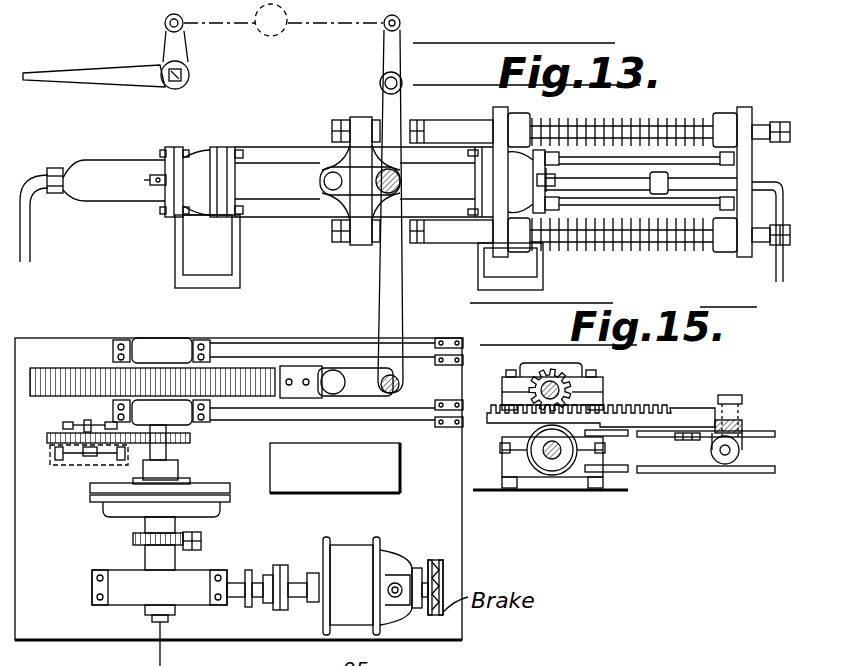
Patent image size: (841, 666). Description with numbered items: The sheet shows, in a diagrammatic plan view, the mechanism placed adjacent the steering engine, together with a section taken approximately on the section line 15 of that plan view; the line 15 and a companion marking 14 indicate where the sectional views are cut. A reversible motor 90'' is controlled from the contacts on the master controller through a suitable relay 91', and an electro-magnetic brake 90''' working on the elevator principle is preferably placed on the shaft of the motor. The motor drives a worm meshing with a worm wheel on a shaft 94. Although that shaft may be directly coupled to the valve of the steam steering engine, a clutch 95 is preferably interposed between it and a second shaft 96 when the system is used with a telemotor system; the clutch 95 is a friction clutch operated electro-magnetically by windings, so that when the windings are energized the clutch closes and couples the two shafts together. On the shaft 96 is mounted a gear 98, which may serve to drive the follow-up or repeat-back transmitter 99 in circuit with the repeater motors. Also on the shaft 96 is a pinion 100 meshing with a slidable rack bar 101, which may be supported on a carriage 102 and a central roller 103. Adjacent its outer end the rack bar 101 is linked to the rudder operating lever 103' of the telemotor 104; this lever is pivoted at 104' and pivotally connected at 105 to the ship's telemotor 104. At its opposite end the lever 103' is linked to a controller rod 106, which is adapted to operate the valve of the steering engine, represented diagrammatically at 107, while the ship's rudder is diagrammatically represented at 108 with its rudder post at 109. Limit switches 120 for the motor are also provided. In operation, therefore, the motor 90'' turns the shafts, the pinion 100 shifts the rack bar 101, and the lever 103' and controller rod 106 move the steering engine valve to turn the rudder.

In FIG. 13, the section line 14 is at (122, 320).
In FIG. 13, the section line 15 is at (27, 390).
In FIG. 13, the reversible motor 90'' is at (372, 568).
In FIG. 13, the electro-magnetic brake 90''' is at (438, 563).
In FIG. 13, the relay 91' is at (355, 466).
In FIG. 13, the shaft 94 is at (143, 555).
In FIG. 13, the clutch 95 is at (92, 502).
In FIG. 13, the shaft 96 is at (173, 452).
In FIG. 13, the gear 98 is at (193, 438).
In FIG. 13, the follow-up or repeat-back transmitter 99 is at (89, 465).
In FIG. 13, the pinion 100 is at (153, 376).
In FIG. 15, the pinion 100 is at (573, 380).
In FIG. 13, the slidable rack bar 101 is at (55, 370).
In FIG. 15, the slidable rack bar 101 is at (628, 410).
In FIG. 15, the carriage 102 is at (730, 415).
In FIG. 15, the central roller 103 is at (556, 473).
In FIG. 13, the rudder operating lever 103' is at (419, 290).
In FIG. 13, the telemotor 104 is at (622, 117).
In FIG. 13, the pivot 104' is at (367, 72).
In FIG. 13, the pivotal connection 105 is at (401, 181).
In FIG. 13, the controller rod 106 is at (336, 27).
In FIG. 13, the steering engine valve 107 is at (258, 38).
In FIG. 13, the ship's rudder 108 is at (96, 78).
In FIG. 13, the rudder post 109 is at (183, 86).
In FIG. 13, the limit switches 120 is at (82, 422).